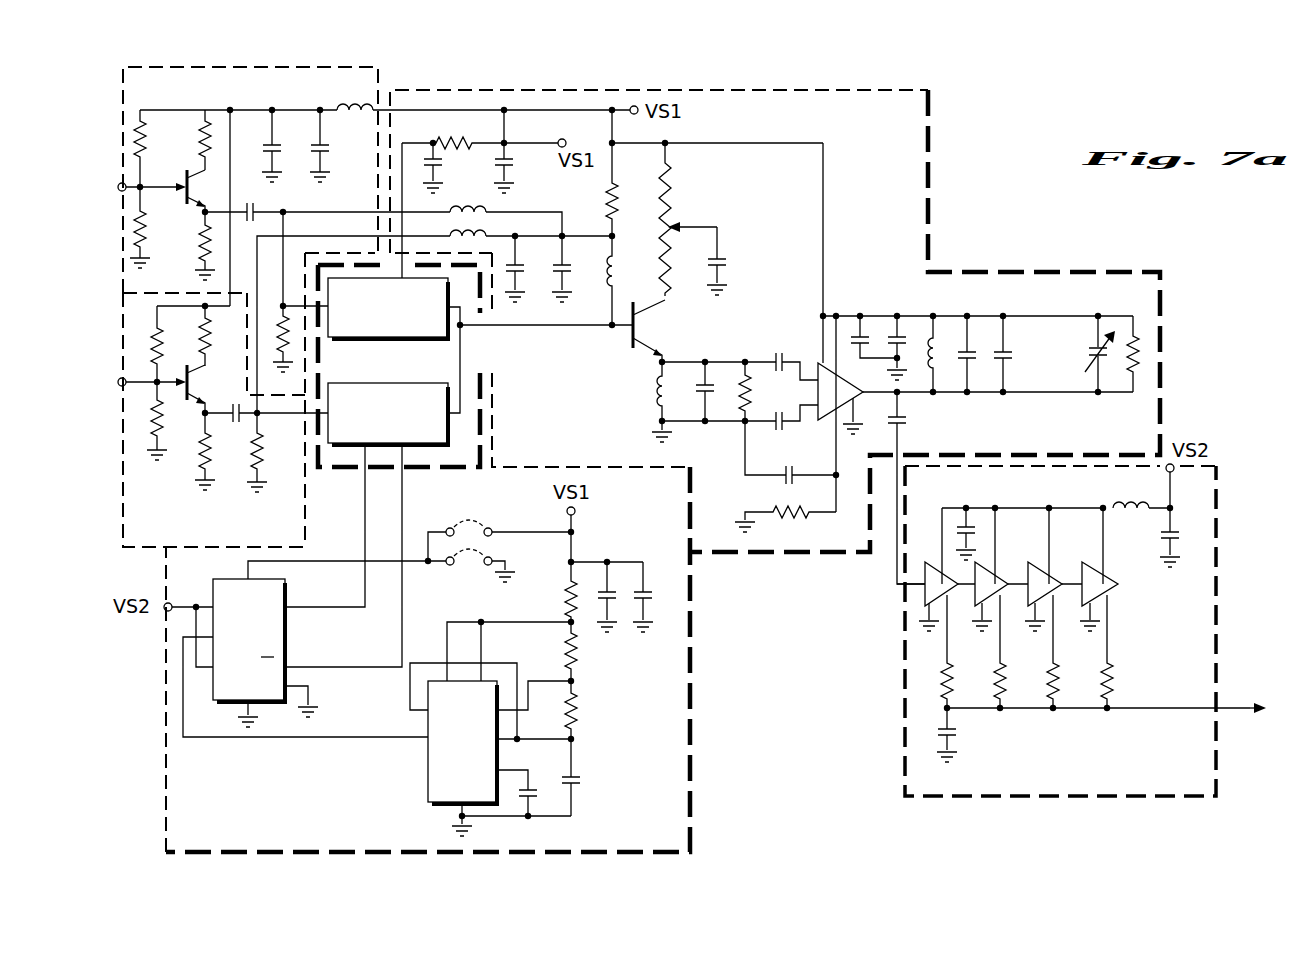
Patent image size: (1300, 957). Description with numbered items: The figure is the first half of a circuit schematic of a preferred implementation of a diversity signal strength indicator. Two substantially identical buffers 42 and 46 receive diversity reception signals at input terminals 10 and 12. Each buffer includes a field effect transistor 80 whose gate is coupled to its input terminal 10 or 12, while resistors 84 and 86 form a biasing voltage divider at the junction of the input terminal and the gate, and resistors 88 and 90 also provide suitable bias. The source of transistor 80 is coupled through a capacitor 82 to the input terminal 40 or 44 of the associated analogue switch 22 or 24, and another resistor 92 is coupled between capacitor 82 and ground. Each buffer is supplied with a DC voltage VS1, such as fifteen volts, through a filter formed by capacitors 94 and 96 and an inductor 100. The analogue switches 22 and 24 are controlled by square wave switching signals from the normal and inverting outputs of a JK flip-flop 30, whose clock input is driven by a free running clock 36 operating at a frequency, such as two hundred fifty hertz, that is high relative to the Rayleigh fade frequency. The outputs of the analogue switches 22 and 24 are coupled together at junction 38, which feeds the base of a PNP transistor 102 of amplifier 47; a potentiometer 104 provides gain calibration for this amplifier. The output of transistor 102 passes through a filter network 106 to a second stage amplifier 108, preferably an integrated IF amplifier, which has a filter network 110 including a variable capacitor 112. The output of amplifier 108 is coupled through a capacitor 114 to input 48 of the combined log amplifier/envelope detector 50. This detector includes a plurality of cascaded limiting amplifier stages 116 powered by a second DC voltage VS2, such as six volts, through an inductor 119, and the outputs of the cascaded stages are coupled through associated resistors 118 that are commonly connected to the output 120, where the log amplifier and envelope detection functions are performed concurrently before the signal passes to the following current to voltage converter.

The input terminal 10 is at (118, 184).
The input terminal 12 is at (118, 379).
The analogue switch 22 is at (390, 340).
The analogue switch 24 is at (405, 383).
The JK flip-flop 30 is at (287, 645).
The clock 36 is at (428, 765).
The junction 38 is at (462, 327).
The input terminal 40 is at (328, 305).
The buffer 42 is at (262, 95).
The input terminal 44 is at (326, 414).
The buffer 46 is at (257, 531).
The amplifier 47 is at (600, 382).
The input 48 is at (893, 584).
The log amplifier/envelope detector 50 is at (1133, 786).
The field effect transistor 80 is at (191, 200).
The capacitor 82 is at (248, 203).
The resistor 84 is at (148, 146).
The resistor 86 is at (148, 238).
The resistor 88 is at (200, 131).
The resistor 90 is at (198, 257).
The resistor 92 is at (290, 335).
The capacitor 94 is at (260, 135).
The capacitor 96 is at (308, 135).
The inductor 100 is at (357, 118).
The PNP transistor 102 is at (660, 328).
The potentiometer 104 is at (693, 220).
The filter network 106 is at (721, 372).
The second stage amplifier 108 is at (820, 420).
The filter network 110 is at (918, 320).
The variable capacitor 112 is at (1085, 355).
The capacitor 114 is at (907, 423).
The cascaded limiting amplifier stages 116 is at (1127, 610).
The resistors 118 is at (1105, 672).
The inductor 119 is at (1146, 500).
The output 120 is at (1222, 706).